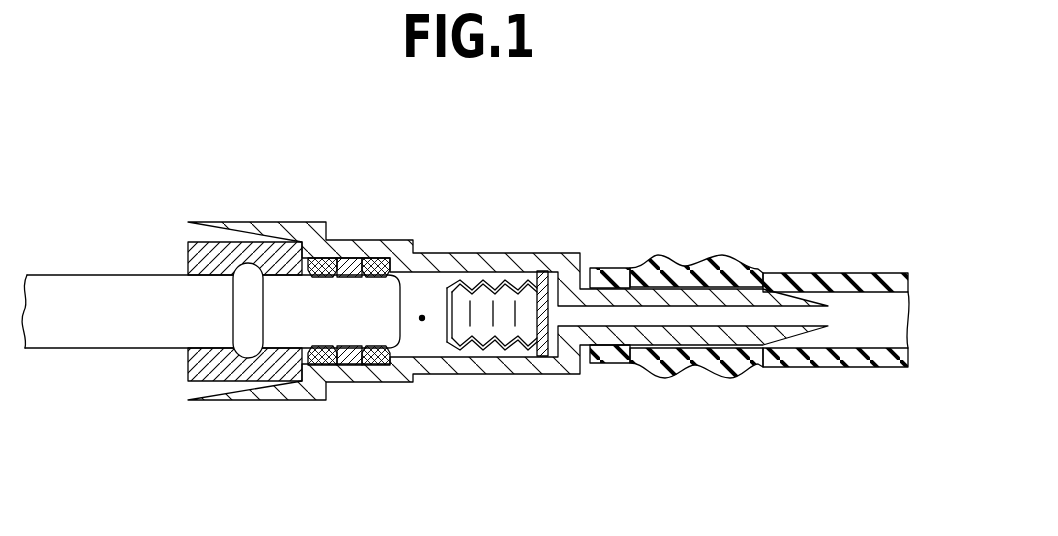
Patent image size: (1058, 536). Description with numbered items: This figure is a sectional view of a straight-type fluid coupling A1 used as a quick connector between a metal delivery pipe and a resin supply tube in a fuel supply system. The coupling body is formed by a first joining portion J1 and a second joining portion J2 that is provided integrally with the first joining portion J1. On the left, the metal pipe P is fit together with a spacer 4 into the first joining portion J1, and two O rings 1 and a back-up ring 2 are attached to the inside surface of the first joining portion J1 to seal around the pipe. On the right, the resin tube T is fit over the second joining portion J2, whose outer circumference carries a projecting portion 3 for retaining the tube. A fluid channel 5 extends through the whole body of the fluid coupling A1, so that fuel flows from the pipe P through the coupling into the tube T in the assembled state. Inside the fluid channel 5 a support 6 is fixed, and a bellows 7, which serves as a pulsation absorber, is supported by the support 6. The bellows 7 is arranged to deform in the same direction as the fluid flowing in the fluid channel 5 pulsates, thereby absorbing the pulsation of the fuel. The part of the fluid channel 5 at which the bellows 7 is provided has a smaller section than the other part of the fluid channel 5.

The O rings 1 is at (327, 366).
The back-up ring 2 is at (348, 258).
The projecting portion 3 is at (663, 283).
The spacer 4 is at (200, 262).
The fluid channel 5 is at (422, 320).
The support 6 is at (552, 340).
The bellows 7 is at (492, 347).
The metal pipe P is at (140, 338).
The resin tube T is at (858, 273).
The first joining portion J1 is at (290, 232).
The second joining portion J2 is at (760, 268).
The fluid coupling A1 is at (560, 221).